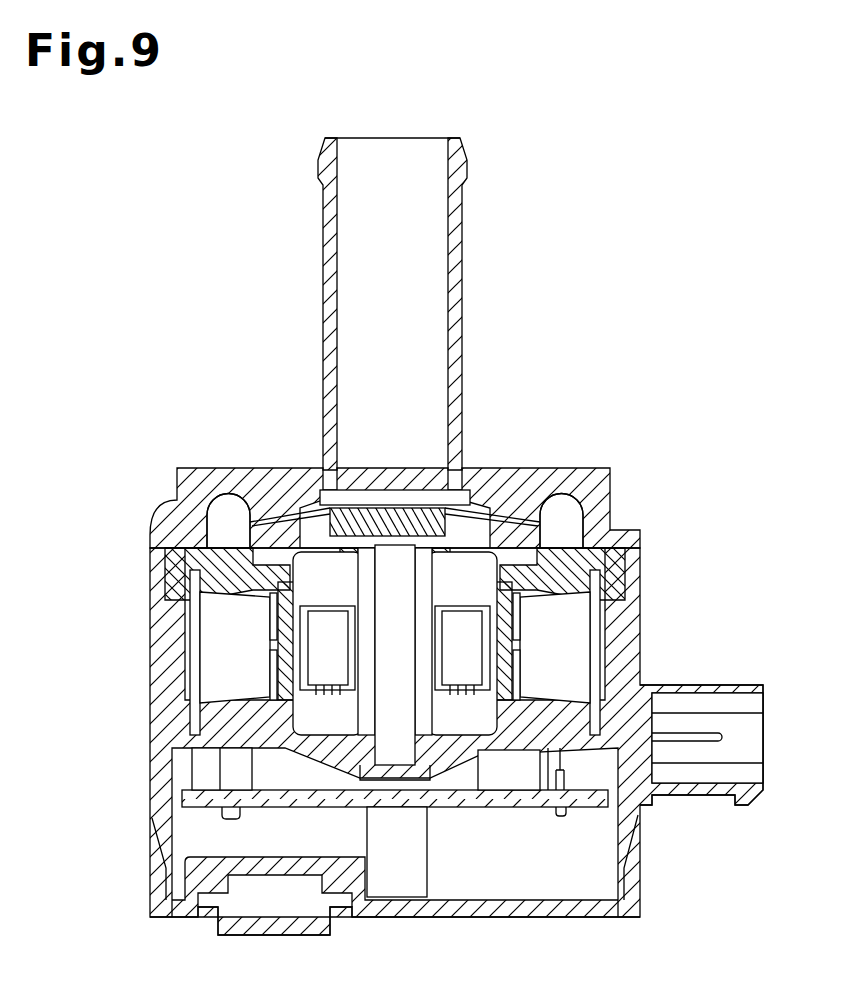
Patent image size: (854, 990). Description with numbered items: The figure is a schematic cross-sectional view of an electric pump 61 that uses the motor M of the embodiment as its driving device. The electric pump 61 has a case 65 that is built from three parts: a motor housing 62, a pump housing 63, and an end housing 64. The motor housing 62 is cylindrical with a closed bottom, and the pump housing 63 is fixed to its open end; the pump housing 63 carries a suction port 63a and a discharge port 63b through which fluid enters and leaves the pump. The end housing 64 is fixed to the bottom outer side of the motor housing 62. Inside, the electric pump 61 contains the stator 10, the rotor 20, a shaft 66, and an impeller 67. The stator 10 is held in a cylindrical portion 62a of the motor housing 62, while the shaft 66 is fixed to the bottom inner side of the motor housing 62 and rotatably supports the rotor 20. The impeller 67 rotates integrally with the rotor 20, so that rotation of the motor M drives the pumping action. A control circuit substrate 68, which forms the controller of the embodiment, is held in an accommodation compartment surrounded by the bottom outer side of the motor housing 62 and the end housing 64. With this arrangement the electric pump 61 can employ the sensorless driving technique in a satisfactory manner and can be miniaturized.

The electric pump 61 is at (537, 364).
The case 65 is at (86, 625).
The pump housing 63 is at (141, 612).
The suction port 63a is at (344, 237).
The discharge port 63b is at (231, 492).
The impeller 67 is at (393, 510).
The motor housing 62 is at (150, 692).
The cylindrical portion 62a is at (636, 648).
The end housing 64 is at (137, 782).
The control circuit substrate 68 is at (466, 802).
The motor M is at (560, 588).
The stator 10 is at (625, 590).
The rotor 20 is at (470, 620).
The shaft 66 is at (418, 636).